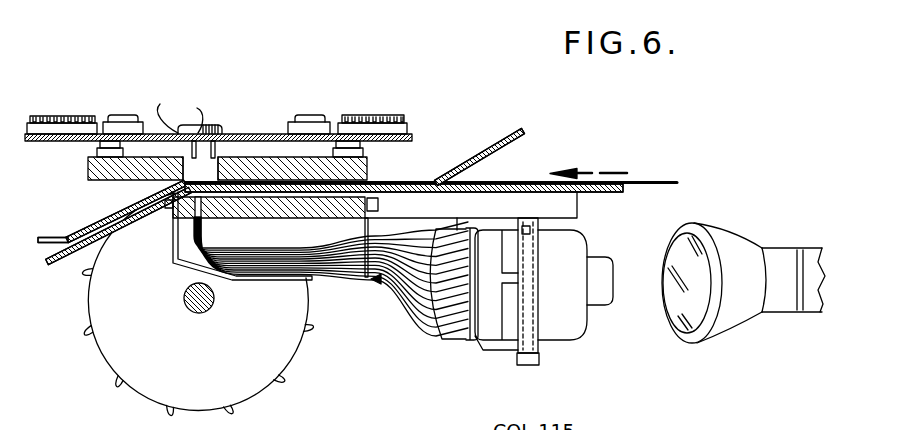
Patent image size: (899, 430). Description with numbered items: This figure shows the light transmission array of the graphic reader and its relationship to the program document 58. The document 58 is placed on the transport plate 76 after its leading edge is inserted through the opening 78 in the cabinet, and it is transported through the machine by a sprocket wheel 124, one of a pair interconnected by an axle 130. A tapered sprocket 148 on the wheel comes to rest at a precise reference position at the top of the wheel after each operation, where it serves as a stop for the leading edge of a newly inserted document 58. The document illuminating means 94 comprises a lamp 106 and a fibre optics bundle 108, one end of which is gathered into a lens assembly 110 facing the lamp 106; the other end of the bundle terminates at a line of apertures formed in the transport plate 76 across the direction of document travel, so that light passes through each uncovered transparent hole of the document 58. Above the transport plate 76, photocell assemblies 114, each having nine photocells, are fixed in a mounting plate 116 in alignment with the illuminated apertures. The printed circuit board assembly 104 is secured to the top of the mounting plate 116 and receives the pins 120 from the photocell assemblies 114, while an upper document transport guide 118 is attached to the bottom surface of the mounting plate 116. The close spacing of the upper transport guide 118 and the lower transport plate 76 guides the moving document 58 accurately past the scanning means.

The program document 58 is at (634, 183).
The transport plate 76 is at (597, 193).
The opening 78 is at (530, 155).
The document illuminating means 94 is at (647, 356).
The printed circuit board assembly 104 is at (277, 112).
The lamp 106 is at (752, 318).
The fibre optics bundle 108 is at (406, 314).
The lens assembly 110 is at (596, 317).
The photocell assemblies 114 is at (219, 168).
The mounting plate 116 is at (88, 168).
The upper document transport guide 118 is at (494, 112).
The pins 120 is at (189, 129).
The sprocket wheel 124 is at (98, 357).
The axle 130 is at (188, 311).
The tapered sprocket 148 is at (315, 319).